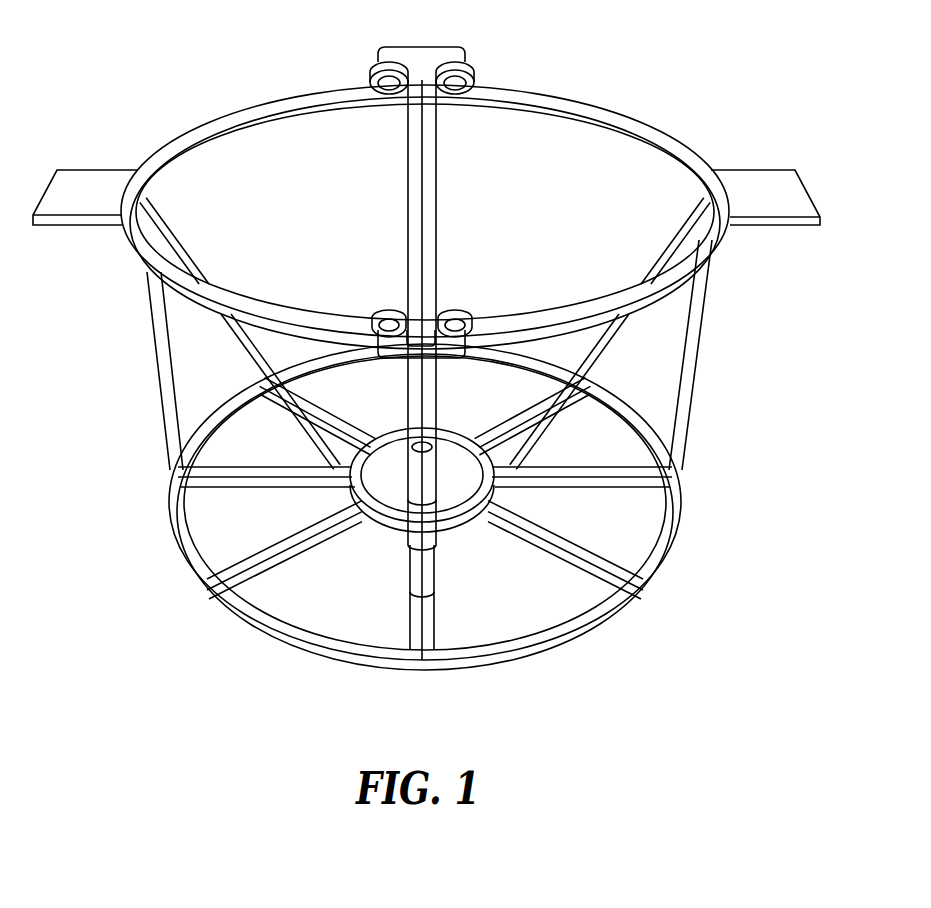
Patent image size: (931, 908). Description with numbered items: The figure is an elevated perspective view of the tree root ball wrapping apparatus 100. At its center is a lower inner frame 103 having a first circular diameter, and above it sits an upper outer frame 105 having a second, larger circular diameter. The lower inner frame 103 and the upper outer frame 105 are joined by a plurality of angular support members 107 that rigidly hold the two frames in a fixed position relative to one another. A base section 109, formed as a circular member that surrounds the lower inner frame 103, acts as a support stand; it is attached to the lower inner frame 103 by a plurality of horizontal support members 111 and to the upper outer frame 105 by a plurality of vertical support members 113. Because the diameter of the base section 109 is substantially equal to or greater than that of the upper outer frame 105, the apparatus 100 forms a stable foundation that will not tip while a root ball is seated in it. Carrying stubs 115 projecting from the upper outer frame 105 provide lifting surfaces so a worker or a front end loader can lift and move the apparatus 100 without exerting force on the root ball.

The tree root ball wrapping apparatus 100 is at (441, 737).
The lower inner frame 103 is at (380, 523).
The upper outer frame 105 is at (597, 105).
The angular support member 107 is at (160, 214).
The base section 109 is at (548, 651).
The horizontal support member 111 is at (275, 565).
The vertical support member 113 is at (147, 326).
The carrying stub 115 is at (75, 180).